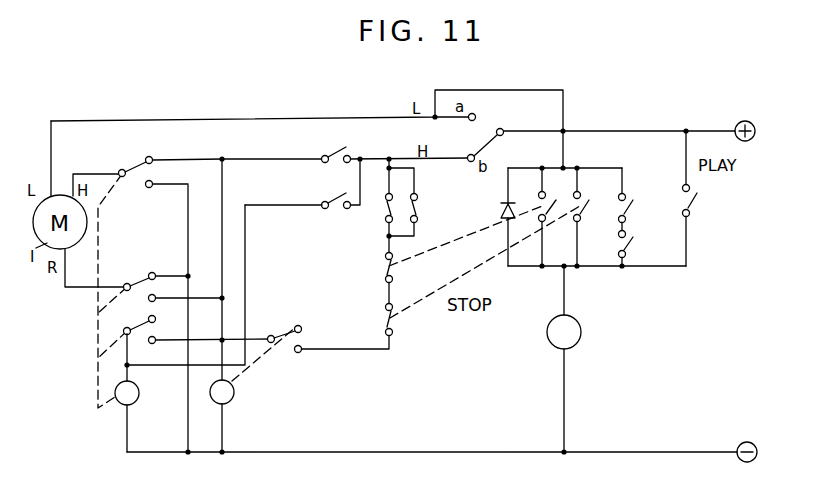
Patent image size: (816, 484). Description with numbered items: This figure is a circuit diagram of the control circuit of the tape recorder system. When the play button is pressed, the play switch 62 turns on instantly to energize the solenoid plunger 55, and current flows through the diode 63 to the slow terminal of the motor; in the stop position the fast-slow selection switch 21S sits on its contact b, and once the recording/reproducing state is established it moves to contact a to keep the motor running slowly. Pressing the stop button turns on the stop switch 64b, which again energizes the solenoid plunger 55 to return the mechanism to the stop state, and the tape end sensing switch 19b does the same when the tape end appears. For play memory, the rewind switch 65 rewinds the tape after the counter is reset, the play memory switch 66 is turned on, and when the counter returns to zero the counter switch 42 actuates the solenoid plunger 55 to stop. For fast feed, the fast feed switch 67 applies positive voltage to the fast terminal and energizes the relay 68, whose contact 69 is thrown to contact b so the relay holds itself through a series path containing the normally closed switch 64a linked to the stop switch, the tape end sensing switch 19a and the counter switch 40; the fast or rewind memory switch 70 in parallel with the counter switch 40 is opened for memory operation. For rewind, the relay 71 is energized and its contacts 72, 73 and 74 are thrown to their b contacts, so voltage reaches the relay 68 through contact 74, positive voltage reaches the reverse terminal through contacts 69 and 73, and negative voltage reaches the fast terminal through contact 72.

The fast-slow selection switch 21S is at (487, 131).
The tape end sensing switch 19a is at (385, 267).
The tape end sensing switch 19b is at (544, 206).
The counter switch 40 is at (386, 212).
The counter switch 42 is at (628, 210).
The solenoid plunger 55 is at (582, 331).
The play switch 62 is at (693, 200).
The diode 63 is at (502, 212).
The normally close switch 64a is at (385, 318).
The stop switch 64b is at (583, 204).
The rewind switch 65 is at (318, 203).
The play memory switch 66 is at (630, 247).
The fast feed switch 67 is at (322, 152).
The relay 68 is at (234, 391).
The contact 69 is at (288, 331).
The fast or rewind memory switch 70 is at (417, 210).
The relay 71 is at (152, 403).
The contact 72 is at (142, 164).
The contact 73 is at (146, 281).
The contact 74 is at (140, 329).